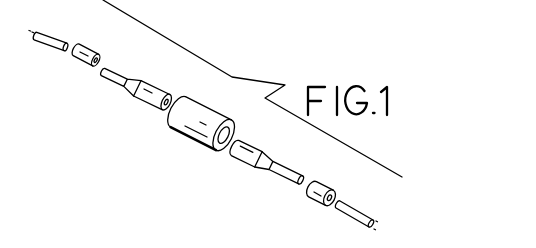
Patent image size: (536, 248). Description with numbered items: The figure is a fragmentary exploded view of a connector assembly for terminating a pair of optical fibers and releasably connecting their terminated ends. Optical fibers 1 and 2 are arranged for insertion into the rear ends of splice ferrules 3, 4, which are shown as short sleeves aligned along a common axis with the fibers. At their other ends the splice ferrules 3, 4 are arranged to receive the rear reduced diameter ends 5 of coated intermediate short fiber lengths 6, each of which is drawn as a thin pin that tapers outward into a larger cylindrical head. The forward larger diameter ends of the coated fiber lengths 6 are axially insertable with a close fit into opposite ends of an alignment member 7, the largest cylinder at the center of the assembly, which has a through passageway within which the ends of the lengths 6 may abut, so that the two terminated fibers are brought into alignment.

The optical fiber 1 is at (54, 35).
The optical fiber 2 is at (353, 204).
The splice ferrule 3 is at (91, 54).
The splice ferrule 4 is at (324, 185).
The rear reduced diameter end 5 is at (116, 81).
The coated intermediate short fiber length 6 is at (153, 86).
The alignment member 7 is at (178, 128).